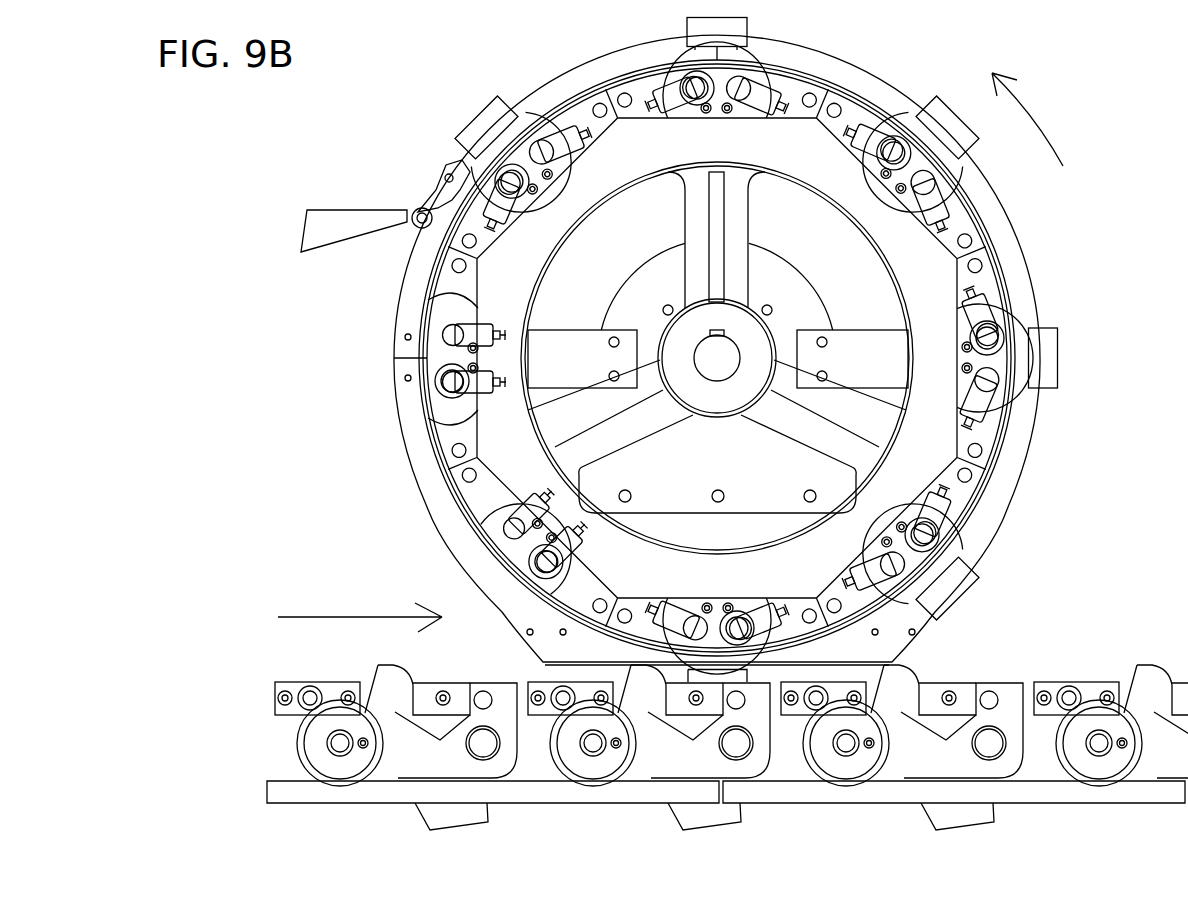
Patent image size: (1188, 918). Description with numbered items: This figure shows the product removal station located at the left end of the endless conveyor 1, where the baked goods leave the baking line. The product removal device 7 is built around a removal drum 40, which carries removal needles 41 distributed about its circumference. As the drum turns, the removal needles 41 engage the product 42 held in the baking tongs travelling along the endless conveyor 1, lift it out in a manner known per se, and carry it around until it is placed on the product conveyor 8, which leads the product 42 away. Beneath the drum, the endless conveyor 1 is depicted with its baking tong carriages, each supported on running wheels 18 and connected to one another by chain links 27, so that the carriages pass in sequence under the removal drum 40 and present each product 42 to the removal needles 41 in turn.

The endless conveyor 1 is at (775, 760).
The product removal device 7 is at (1053, 243).
The product conveyor 8 is at (325, 222).
The running wheels 18 is at (604, 766).
The chain links 27 is at (528, 762).
The removal drum 40 is at (1028, 430).
The removal needles 41 is at (965, 547).
The product 42 is at (482, 125).